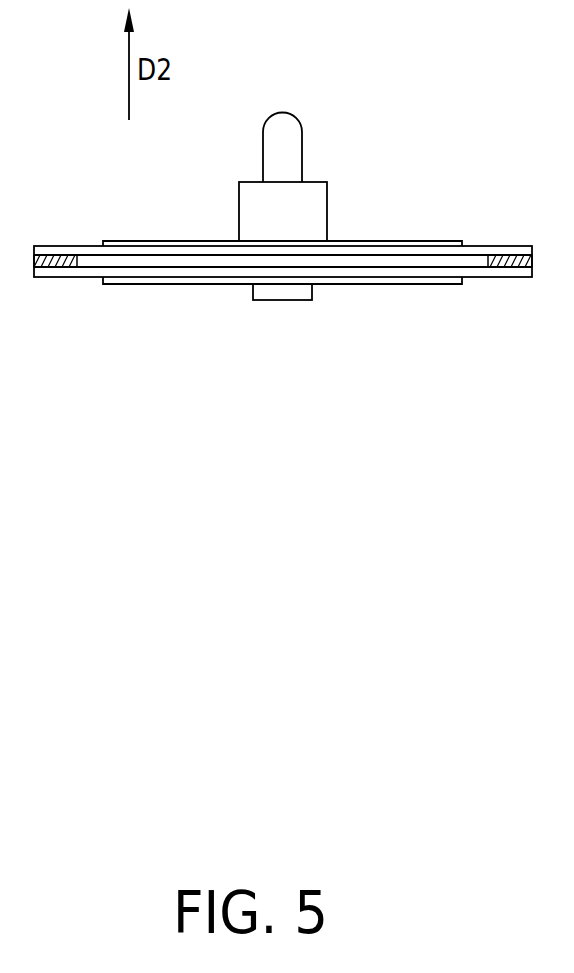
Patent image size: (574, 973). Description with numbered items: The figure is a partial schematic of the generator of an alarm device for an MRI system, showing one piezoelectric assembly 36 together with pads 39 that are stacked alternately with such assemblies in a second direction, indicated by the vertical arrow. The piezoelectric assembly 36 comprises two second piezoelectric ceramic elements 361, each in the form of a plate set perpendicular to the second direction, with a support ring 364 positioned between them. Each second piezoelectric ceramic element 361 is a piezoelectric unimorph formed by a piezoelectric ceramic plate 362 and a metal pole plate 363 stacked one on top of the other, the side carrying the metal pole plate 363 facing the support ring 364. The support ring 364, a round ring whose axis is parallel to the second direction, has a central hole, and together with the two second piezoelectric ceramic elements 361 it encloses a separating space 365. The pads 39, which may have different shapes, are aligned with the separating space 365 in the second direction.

The piezoelectric assembly 36 is at (103, 229).
The second piezoelectric ceramic element 361 is at (283, 262).
The piezoelectric ceramic plate 362 is at (360, 240).
The metal pole plate 363 is at (525, 250).
The support ring 364 is at (52, 262).
The separating space 365 is at (192, 260).
The pad 39 is at (248, 192).